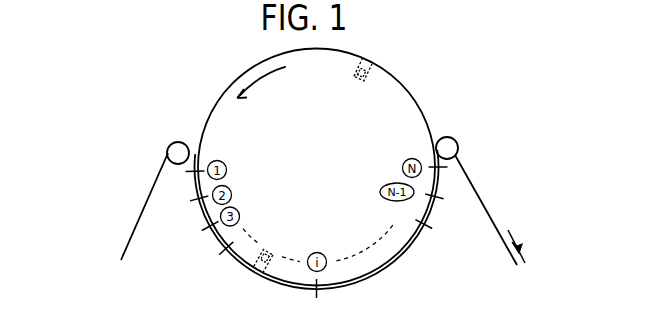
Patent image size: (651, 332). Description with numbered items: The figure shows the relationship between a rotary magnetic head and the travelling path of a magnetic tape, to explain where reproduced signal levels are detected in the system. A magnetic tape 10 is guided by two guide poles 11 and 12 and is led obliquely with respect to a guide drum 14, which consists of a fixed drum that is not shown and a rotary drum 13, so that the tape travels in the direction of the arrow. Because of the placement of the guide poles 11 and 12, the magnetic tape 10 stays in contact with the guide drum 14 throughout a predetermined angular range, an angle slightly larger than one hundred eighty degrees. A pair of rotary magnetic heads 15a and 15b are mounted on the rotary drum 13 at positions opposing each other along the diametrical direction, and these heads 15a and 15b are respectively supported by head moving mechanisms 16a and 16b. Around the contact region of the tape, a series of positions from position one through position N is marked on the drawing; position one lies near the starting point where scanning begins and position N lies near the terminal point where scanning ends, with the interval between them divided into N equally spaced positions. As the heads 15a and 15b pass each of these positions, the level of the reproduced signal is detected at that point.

The magnetic tape 10 is at (489, 190).
The guide pole 11 is at (172, 145).
The guide pole 12 is at (446, 136).
The rotary drum 13 is at (417, 106).
The guide drum 14 is at (213, 100).
The rotary magnetic head 15a is at (247, 267).
The rotary magnetic head 15b is at (373, 61).
The head moving mechanism 16a is at (276, 250).
The head moving mechanism 16b is at (358, 79).